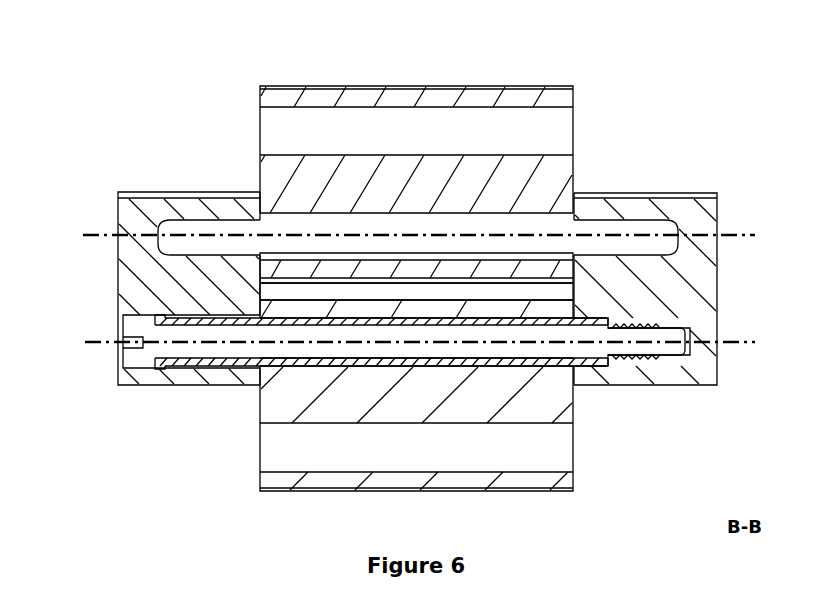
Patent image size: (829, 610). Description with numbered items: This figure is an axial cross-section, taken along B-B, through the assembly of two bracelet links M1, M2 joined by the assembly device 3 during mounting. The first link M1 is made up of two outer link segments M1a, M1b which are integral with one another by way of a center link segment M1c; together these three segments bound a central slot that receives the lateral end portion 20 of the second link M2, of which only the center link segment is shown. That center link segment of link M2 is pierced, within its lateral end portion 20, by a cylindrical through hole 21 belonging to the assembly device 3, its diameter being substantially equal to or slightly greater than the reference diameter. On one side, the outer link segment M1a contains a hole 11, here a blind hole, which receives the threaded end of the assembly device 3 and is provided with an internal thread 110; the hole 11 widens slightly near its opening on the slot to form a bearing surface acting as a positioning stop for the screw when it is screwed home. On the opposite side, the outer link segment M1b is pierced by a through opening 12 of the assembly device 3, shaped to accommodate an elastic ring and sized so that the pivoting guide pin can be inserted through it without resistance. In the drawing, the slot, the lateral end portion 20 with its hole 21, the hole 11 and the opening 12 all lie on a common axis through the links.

The first bracelet link M1 is at (427, 72).
The outer link segment M1a is at (696, 210).
The outer link segment M1b is at (125, 260).
The center link segment M1c is at (288, 168).
The second bracelet link M2 is at (277, 483).
The assembly device 3 is at (187, 348).
The hole 11 is at (672, 357).
The opening 12 is at (120, 352).
The lateral end portion 20 is at (537, 311).
The cylindrical through hole 21 is at (495, 365).
The internal thread 110 is at (640, 357).